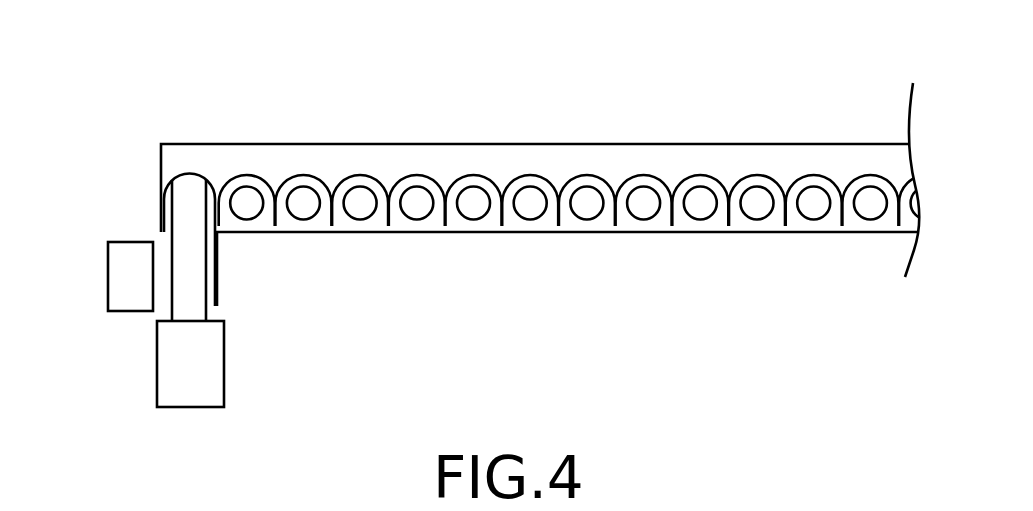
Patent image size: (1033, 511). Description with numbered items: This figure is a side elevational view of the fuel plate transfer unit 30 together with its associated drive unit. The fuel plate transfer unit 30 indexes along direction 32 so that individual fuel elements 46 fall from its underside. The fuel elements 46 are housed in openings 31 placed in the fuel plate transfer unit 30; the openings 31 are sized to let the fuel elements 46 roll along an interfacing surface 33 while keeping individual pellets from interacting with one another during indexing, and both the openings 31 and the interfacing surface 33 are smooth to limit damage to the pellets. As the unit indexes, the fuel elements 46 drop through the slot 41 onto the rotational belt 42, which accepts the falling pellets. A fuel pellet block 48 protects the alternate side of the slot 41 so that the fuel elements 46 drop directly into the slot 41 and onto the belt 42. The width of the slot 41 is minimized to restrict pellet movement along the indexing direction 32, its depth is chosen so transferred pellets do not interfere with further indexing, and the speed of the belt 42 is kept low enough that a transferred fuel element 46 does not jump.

The fuel plate transfer unit 30 is at (826, 144).
The openings 31 is at (750, 181).
The indexing direction 32 is at (573, 85).
The interfacing surface 33 is at (722, 233).
The slot 41 is at (209, 273).
The rotational belt 42 is at (157, 373).
The fuel elements 46 is at (582, 215).
The fuel pellet block 48 is at (108, 268).